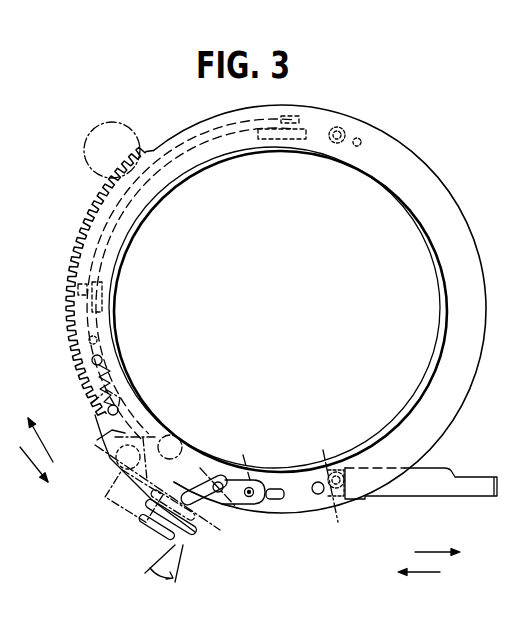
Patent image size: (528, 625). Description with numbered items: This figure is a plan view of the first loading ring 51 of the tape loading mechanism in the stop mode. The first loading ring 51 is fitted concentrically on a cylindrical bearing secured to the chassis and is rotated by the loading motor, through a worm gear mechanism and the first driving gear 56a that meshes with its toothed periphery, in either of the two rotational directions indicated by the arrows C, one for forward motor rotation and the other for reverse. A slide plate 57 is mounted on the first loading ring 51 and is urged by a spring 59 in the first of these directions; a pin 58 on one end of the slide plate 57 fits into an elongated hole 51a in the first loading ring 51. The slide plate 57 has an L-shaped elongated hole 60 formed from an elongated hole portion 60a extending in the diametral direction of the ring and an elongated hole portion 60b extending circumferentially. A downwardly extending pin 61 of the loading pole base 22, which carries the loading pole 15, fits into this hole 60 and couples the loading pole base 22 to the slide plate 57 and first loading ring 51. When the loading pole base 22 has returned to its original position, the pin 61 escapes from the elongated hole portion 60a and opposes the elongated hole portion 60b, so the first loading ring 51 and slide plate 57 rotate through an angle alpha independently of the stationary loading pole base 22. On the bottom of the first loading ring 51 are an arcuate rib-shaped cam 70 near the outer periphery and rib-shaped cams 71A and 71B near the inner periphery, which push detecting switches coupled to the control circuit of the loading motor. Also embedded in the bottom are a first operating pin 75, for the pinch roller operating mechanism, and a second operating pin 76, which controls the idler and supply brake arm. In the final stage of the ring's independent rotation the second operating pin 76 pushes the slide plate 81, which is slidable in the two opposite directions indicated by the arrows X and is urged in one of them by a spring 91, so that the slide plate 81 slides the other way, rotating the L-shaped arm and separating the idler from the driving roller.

The first loading ring 51 is at (430, 109).
The loading pole base 22 is at (154, 422).
The arcuate rib-shaped cam 70 is at (188, 132).
The first driving gear 56a is at (85, 147).
The first operating pin 75 is at (357, 137).
The rib-shaped cam 71B is at (290, 148).
The rib-shaped cam 71A is at (103, 306).
The spring 59 is at (108, 376).
The loading pole 15 is at (112, 472).
The downwardly extending pin 61 is at (142, 532).
The L-shaped elongated hole 60 is at (194, 537).
The elongated hole portion 60b is at (152, 537).
The elongated hole portion 60a is at (214, 484).
The slide plate 57 is at (182, 551).
The elongated hole 51a is at (284, 502).
The pin 58 is at (248, 498).
The second operating pin 76 is at (327, 467).
The spring 91 is at (345, 495).
The slide plate 81 is at (437, 498).
The rotation direction arrows C is at (39, 450).
The sliding direction arrows X is at (428, 564).